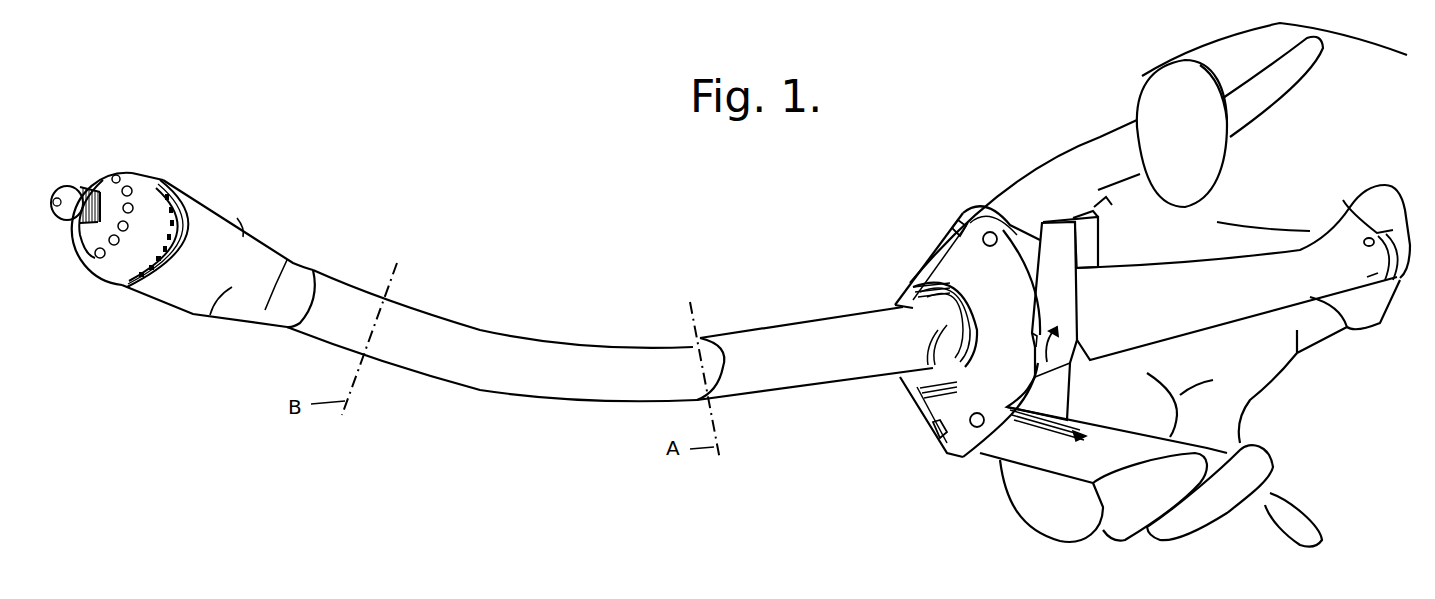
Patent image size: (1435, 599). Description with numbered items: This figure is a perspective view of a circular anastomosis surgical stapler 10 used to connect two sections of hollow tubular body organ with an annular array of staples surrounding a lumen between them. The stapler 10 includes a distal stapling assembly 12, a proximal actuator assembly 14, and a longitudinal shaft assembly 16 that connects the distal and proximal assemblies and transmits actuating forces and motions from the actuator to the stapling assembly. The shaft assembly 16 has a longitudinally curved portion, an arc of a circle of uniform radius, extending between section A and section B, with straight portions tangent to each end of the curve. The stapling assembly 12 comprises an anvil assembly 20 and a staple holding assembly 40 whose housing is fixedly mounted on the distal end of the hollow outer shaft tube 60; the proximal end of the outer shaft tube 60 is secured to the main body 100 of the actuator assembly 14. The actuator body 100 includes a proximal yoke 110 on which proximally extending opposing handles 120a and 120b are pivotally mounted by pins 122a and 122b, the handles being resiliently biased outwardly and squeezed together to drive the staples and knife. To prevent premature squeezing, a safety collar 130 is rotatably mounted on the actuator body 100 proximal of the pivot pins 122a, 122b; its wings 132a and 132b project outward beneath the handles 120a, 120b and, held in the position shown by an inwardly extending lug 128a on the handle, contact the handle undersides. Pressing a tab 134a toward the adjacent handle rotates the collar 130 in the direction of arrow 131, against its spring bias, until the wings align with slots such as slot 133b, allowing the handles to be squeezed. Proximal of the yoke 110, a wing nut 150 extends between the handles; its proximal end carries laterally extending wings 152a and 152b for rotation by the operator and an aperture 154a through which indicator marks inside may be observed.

The circular anastomosis surgical stapler 10 is at (608, 496).
The distal stapling assembly 12 is at (173, 318).
The proximal actuator assembly 14 is at (1040, 143).
The longitudinal shaft assembly 16 is at (514, 418).
The anvil assembly 20 is at (139, 177).
The staple holding assembly 40 is at (225, 215).
The hollow outer shaft tube 60 is at (481, 373).
The main body of actuator assembly 100 is at (797, 327).
The proximal yoke 110 is at (925, 402).
The handle 120a is at (1263, 107).
The handle 120b is at (1303, 530).
The pin 122a is at (985, 233).
The pin 122b is at (971, 425).
The lug 128a is at (1097, 213).
The safety collar 130 is at (1070, 363).
The arrow 131 is at (1063, 347).
The wing 132a is at (1102, 195).
The wing 132b is at (1058, 400).
The slot 133b is at (1073, 430).
The tab 134a is at (1090, 241).
The wing nut 150 is at (1199, 271).
The wing 152a is at (1387, 195).
The wing 152b is at (1367, 322).
The aperture 154a is at (1347, 206).